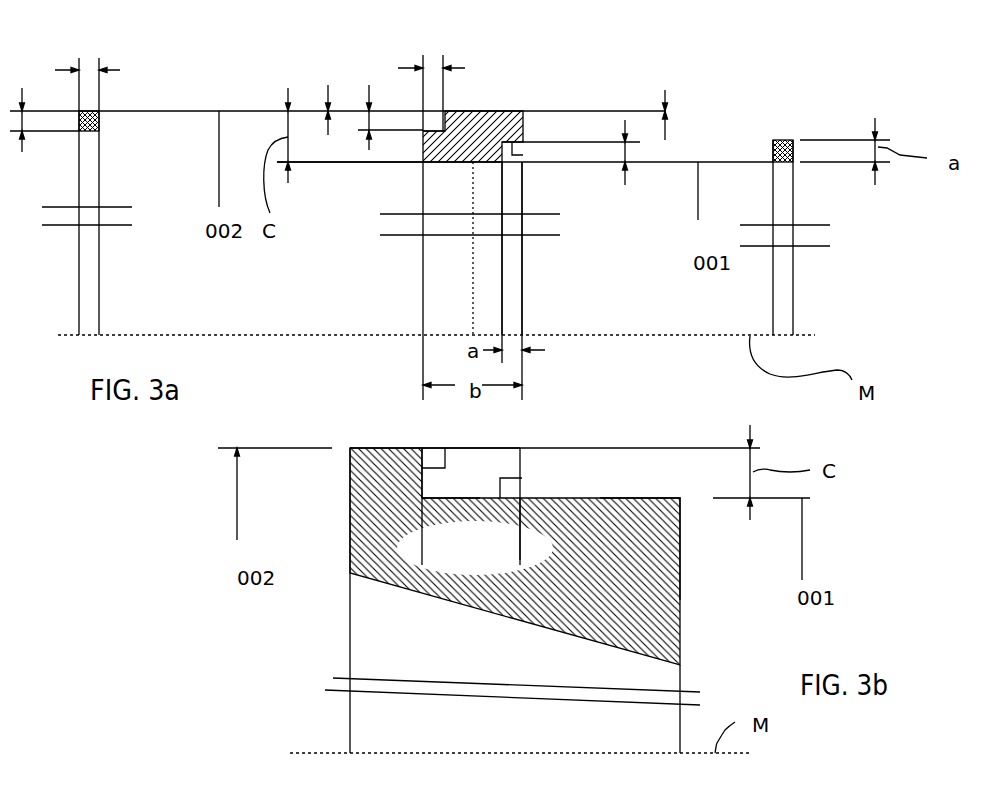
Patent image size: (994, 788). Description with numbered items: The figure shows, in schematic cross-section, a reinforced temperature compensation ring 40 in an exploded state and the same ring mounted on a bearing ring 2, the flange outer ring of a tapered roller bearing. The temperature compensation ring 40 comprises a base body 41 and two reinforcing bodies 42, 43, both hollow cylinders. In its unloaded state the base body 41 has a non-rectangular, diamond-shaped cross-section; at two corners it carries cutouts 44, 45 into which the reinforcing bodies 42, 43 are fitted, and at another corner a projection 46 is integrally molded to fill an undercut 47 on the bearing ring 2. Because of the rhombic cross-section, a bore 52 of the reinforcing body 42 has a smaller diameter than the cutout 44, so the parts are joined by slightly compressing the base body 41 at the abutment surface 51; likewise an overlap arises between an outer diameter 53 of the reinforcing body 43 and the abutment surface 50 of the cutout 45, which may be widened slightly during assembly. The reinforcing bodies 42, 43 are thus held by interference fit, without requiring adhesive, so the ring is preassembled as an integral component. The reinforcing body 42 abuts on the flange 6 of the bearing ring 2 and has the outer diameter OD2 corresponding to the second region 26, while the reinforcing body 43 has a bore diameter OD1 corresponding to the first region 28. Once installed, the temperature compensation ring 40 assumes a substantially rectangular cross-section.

In FIG. 3b, the bearing ring 2 is at (640, 612).
In FIG. 3b, the flange 6 is at (378, 479).
In FIG. 3b, the second region 26 is at (390, 446).
In FIG. 3b, the first region 28 is at (608, 503).
In FIG. 3b, the temperature compensation ring 40 is at (503, 442).
In FIG. 3a, the base body 41 is at (483, 130).
In FIG. 3b, the base body 41 is at (498, 462).
In FIG. 3a, the reinforcing body 42 is at (85, 113).
In FIG. 3b, the reinforcing body 42 is at (432, 462).
In FIG. 3a, the reinforcing body 43 is at (790, 140).
In FIG. 3b, the reinforcing body 43 is at (513, 485).
In FIG. 3a, the cutout 44 is at (434, 127).
In FIG. 3a, the cutout 45 is at (515, 152).
In FIG. 3a, the projection 46 is at (423, 162).
In FIG. 3b, the undercut 47 is at (420, 500).
In FIG. 3a, the abutment surface 50 is at (505, 150).
In FIG. 3a, the abutment surface 51 is at (432, 130).
In FIG. 3a, the bore 52 is at (88, 128).
In FIG. 3a, the outer diameter 53 is at (775, 140).